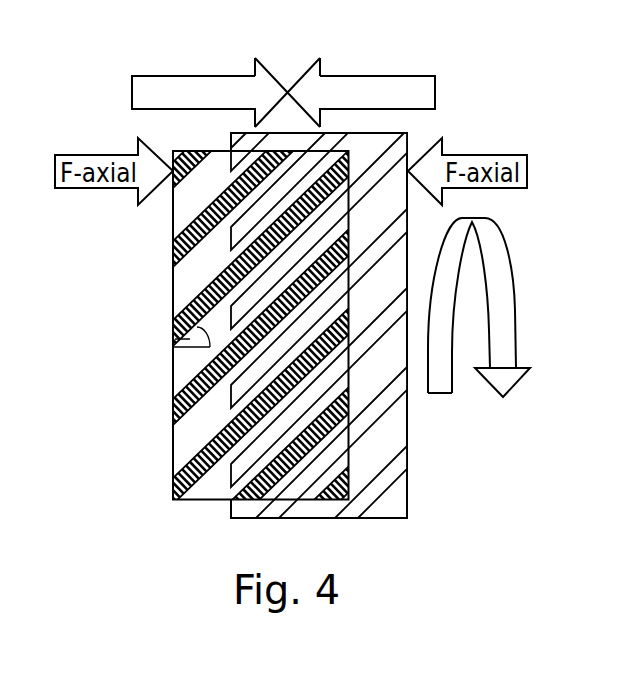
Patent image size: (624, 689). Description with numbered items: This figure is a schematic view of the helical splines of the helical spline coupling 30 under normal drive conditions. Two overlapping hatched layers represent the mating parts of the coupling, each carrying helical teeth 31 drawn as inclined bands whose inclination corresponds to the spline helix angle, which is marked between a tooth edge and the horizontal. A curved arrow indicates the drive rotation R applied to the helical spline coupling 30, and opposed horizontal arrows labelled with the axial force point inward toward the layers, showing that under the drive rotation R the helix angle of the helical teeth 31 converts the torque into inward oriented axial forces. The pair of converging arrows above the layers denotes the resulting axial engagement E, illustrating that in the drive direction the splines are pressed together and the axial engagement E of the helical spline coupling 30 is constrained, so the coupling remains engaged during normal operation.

The helical spline coupling 30 is at (259, 344).
The helical teeth 31 is at (174, 483).
The axial engagement E is at (289, 60).
The drive rotation R is at (481, 307).